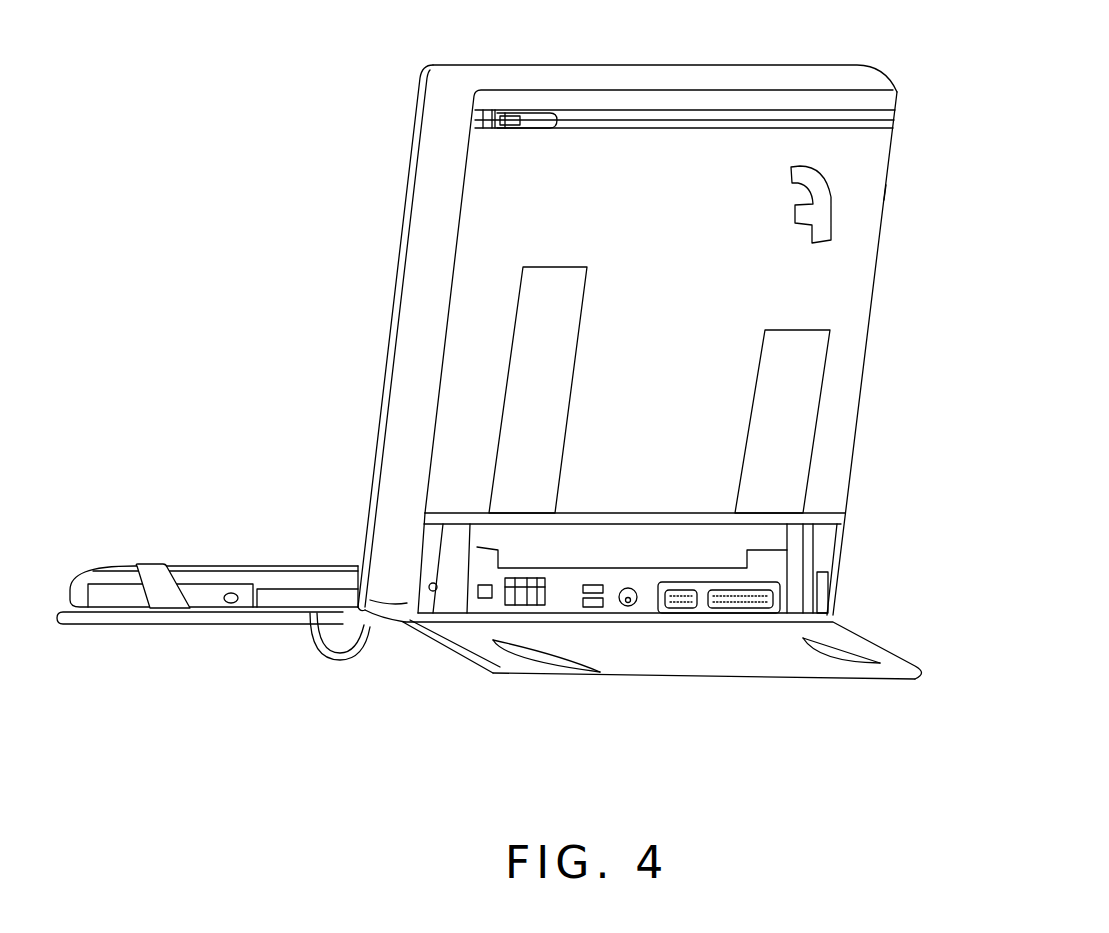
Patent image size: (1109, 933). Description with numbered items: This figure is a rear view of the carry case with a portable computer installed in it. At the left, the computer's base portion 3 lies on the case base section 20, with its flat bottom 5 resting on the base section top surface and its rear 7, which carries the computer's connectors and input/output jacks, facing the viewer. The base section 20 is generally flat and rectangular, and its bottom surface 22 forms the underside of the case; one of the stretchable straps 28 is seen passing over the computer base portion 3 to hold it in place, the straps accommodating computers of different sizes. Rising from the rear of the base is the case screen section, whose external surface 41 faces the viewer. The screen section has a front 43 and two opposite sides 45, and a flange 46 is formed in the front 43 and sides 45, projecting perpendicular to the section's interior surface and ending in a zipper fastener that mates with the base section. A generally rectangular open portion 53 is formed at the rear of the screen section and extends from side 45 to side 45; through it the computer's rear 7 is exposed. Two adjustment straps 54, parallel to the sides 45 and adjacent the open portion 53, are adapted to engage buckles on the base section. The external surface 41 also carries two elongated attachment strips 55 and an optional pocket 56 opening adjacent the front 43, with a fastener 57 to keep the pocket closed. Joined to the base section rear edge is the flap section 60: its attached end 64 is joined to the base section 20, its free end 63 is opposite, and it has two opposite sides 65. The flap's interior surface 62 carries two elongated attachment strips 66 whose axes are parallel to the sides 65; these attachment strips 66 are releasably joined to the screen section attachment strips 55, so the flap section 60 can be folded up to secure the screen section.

The base portion 3 is at (235, 580).
The flat bottom 5 is at (237, 610).
The rear 7 is at (557, 600).
The base section 20 is at (208, 612).
The bottom surface 22 is at (262, 627).
The stretchable straps 28 is at (165, 595).
The external surface 41 is at (692, 223).
The front 43 is at (728, 82).
The sides 45 is at (880, 257).
The flange 46 is at (412, 357).
The open portion 53 is at (637, 543).
The adjustment straps 54 is at (465, 545).
The attachment strips 55 is at (757, 422).
The pocket 56 is at (735, 128).
The fastener 57 is at (602, 123).
The flap section 60 is at (713, 663).
The interior surface 62 is at (472, 635).
The free end 63 is at (800, 680).
The attached end 64 is at (653, 623).
The sides 65 is at (435, 633).
The attachment strips 66 is at (557, 663).